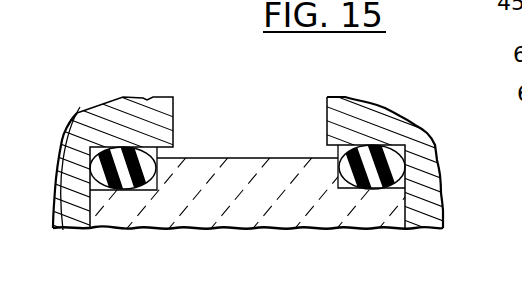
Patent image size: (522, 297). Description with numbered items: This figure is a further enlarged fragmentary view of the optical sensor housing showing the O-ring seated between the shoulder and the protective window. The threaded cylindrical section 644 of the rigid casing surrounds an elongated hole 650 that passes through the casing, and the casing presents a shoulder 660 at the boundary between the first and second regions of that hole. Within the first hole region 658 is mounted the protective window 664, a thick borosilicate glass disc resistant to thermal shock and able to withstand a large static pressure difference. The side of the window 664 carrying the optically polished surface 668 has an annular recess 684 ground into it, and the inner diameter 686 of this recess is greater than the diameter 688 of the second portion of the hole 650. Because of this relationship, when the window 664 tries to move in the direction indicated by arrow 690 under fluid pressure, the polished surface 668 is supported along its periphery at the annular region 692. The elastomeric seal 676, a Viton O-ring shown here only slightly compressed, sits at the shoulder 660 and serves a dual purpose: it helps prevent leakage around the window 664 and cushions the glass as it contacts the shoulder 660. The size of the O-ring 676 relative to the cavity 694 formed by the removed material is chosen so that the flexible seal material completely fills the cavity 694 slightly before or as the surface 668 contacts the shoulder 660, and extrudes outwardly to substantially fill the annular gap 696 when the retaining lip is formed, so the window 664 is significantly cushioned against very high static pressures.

The threaded cylindrical section 644 is at (107, 110).
The elongated hole 650 is at (268, 80).
The first hole region 658 is at (173, 108).
The shoulder 660 is at (145, 147).
The protective window 664 is at (252, 240).
The second polished surface 668 is at (231, 140).
The seal 676 is at (76, 222).
The annular recess 684 is at (401, 229).
The inner diameter 686 is at (338, 175).
The diameter 688 is at (327, 122).
The arrow 690 is at (220, 240).
The annular region 692 is at (158, 192).
The cavity 694 is at (96, 152).
The annular gap 696 is at (327, 147).